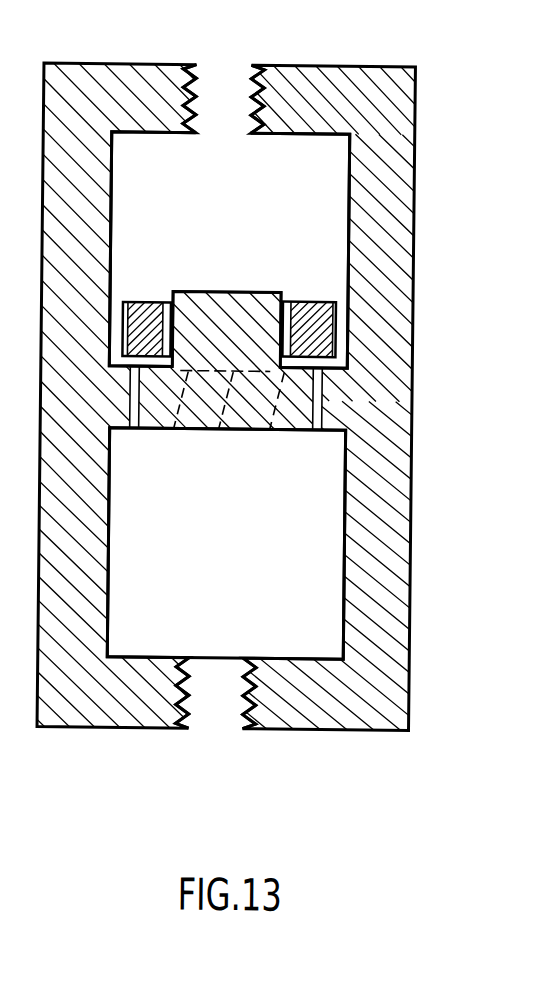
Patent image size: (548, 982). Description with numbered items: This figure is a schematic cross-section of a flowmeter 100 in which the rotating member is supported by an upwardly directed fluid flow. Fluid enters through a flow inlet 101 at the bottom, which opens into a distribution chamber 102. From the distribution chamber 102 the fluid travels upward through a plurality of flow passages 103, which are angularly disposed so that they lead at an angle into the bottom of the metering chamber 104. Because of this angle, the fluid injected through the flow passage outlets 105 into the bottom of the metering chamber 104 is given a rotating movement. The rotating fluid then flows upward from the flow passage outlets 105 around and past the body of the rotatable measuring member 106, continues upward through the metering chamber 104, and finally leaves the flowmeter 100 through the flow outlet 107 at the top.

The flowmeter 100 is at (412, 220).
The flow inlet 101 is at (191, 692).
The distribution chamber 102 is at (205, 557).
The flow passages 103 is at (174, 393).
The metering chamber 104 is at (233, 193).
The flow passage outlets 105 is at (127, 303).
The rotatable measuring member 106 is at (323, 301).
The flow outlet 107 is at (245, 113).